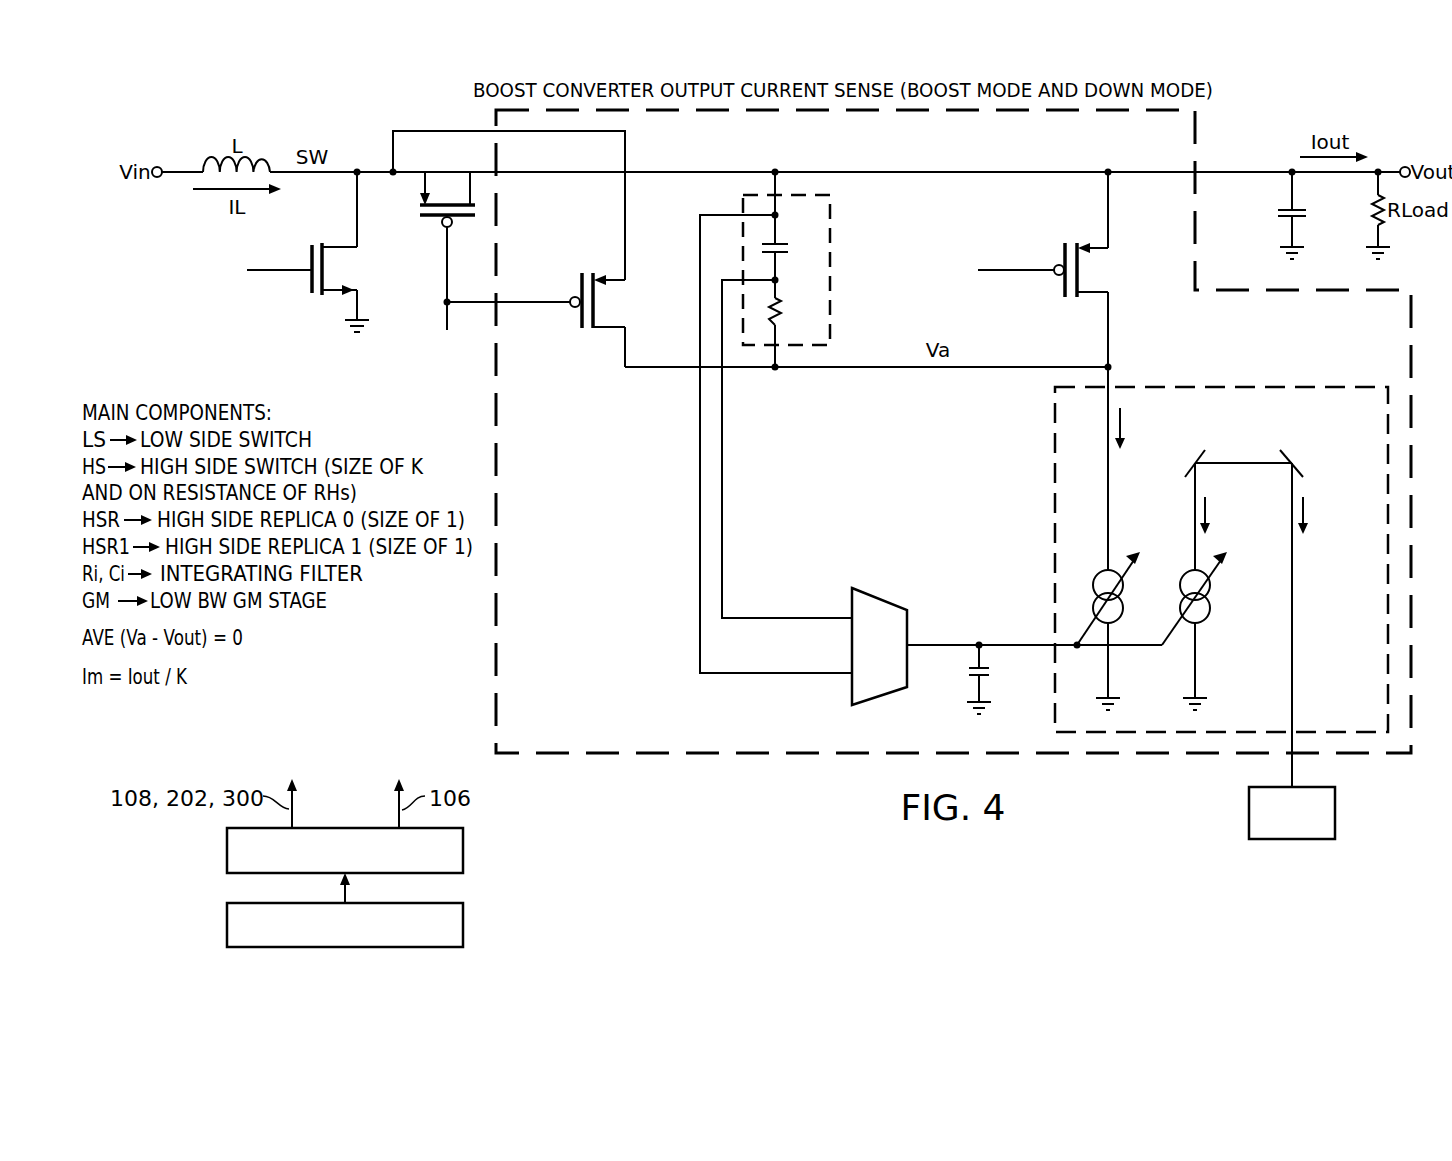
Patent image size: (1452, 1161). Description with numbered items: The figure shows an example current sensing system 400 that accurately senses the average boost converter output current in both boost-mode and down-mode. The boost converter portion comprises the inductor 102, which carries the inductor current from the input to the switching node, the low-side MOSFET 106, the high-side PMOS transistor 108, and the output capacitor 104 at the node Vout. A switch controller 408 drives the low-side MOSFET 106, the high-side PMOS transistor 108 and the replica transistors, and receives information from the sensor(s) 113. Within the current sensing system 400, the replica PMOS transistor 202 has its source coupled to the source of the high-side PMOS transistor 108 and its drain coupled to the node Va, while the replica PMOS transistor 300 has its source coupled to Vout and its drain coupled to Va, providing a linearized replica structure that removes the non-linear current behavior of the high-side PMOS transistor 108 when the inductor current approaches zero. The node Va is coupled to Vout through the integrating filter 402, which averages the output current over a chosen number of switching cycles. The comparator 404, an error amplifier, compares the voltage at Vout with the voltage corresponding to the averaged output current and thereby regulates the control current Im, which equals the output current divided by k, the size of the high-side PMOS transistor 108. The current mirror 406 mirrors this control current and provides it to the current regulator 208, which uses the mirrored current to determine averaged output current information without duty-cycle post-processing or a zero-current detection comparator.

The inductor 102 is at (217, 157).
The capacitor 104 is at (1282, 211).
The MOSFET 106 is at (311, 283).
The high-side PMOS transistor 108 is at (433, 228).
The sensor(s) 113 is at (226, 923).
The replica PMOS transistor 202 is at (580, 318).
The current regulator 208 is at (1271, 827).
The replica PMOS transistor 300 is at (1062, 262).
The current sensing system 400 is at (718, 762).
The integrating filter 402 is at (841, 228).
The comparator 404 is at (882, 596).
The current mirror 406 is at (1237, 380).
The switch controller 408 is at (226, 848).